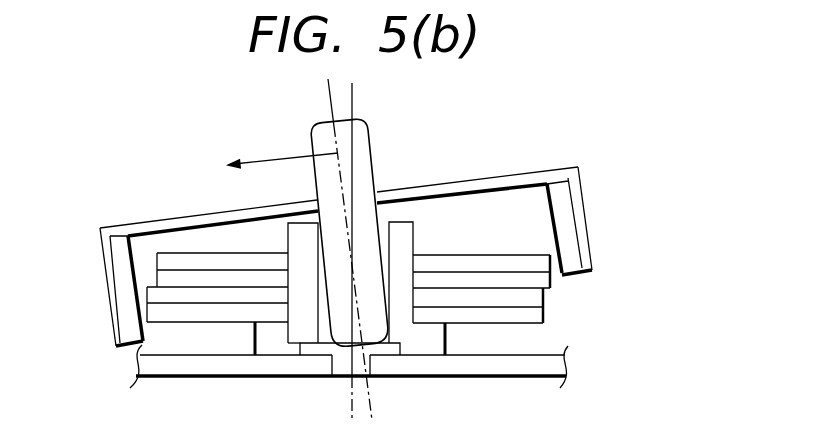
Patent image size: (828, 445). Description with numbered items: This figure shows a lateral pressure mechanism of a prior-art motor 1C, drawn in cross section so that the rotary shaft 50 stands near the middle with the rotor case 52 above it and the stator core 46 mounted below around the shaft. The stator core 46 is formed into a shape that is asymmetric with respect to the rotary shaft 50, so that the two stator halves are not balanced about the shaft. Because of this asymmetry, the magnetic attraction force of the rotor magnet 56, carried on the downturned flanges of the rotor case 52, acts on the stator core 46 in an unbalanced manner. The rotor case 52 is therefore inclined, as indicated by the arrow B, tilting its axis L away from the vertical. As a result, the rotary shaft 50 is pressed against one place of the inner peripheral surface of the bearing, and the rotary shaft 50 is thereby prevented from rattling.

The motor 1C is at (520, 138).
The stator core 46 is at (490, 264).
The rotary shaft 50 is at (366, 134).
The rotor case 52 is at (200, 216).
The rotor magnet 56 is at (574, 253).
The axis line L is at (327, 98).
The arrow B is at (275, 156).